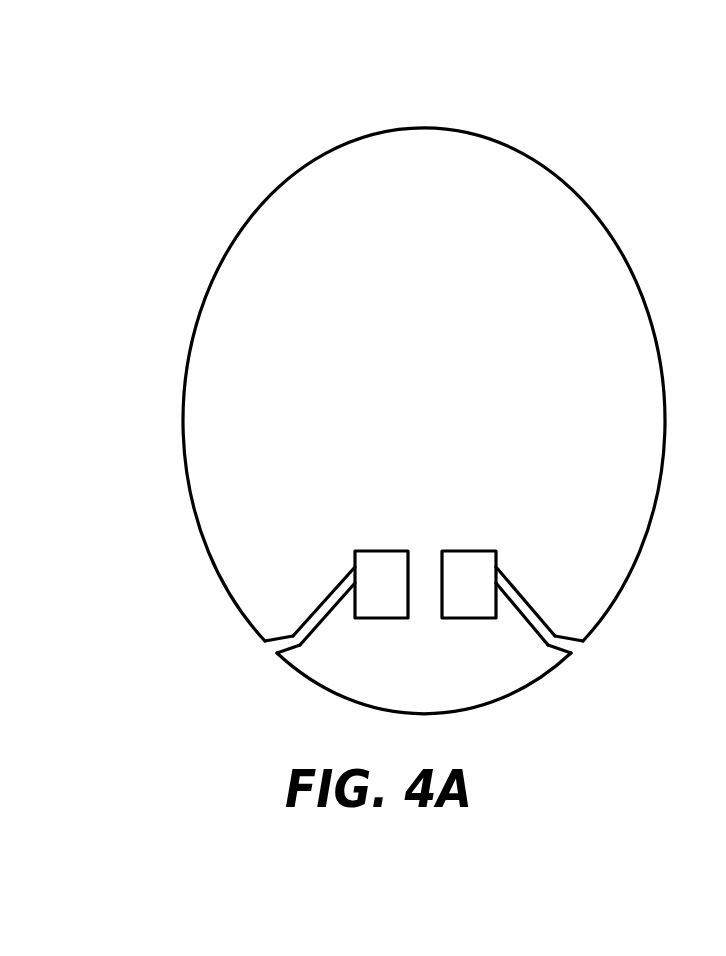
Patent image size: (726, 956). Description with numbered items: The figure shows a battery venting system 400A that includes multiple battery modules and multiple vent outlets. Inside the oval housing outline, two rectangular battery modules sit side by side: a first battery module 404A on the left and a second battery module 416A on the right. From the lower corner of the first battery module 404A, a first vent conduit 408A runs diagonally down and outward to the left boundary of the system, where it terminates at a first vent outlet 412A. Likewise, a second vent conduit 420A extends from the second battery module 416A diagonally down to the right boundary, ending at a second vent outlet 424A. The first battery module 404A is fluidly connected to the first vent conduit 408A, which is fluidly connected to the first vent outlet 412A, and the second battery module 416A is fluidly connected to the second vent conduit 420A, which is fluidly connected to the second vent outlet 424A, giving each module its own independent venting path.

The battery venting system 400A is at (343, 109).
The first battery module 404A is at (372, 551).
The second battery module 416A is at (458, 551).
The first vent conduit 408A is at (333, 589).
The second vent conduit 420A is at (527, 599).
The first vent outlet 412A is at (257, 658).
The second vent outlet 424A is at (595, 652).